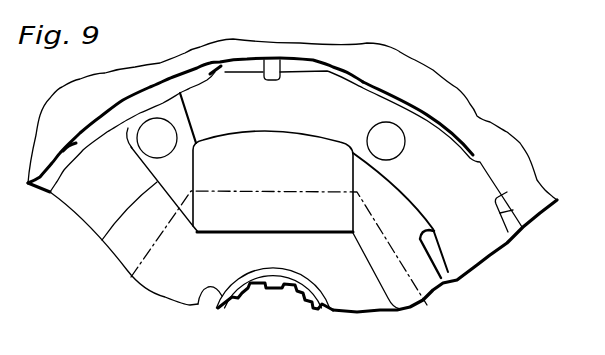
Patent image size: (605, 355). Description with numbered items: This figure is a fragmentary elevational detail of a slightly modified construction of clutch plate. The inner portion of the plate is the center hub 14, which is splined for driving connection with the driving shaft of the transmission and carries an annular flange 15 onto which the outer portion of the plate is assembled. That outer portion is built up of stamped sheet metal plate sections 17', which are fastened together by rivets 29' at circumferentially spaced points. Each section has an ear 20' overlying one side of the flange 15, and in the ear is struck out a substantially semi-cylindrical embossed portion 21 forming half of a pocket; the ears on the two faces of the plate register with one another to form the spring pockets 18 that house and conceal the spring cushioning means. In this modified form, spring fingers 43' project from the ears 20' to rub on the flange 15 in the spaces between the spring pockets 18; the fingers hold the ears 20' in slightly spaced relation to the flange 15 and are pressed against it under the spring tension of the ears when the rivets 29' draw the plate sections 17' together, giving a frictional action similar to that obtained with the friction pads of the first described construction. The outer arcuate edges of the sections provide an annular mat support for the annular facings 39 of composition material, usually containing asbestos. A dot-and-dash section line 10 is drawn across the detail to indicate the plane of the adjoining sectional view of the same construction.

The center line of clutch 10 is at (133, 281).
The center hub 14 is at (200, 306).
The annular flange 15 is at (448, 276).
The plate sections 17' is at (275, 135).
The spring pockets 18 is at (288, 150).
The ears 20' is at (134, 211).
The struck out or embossed portion 21 is at (305, 226).
The rivets 29' is at (264, 149).
The annular facings 39 is at (487, 120).
The spring fingers 43' is at (376, 288).